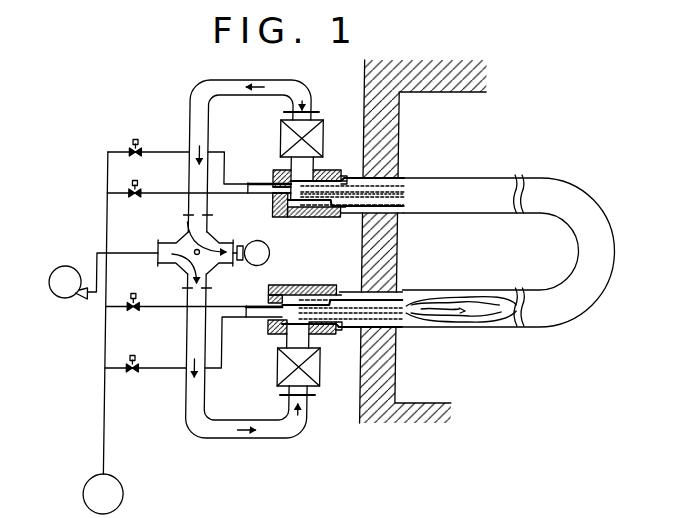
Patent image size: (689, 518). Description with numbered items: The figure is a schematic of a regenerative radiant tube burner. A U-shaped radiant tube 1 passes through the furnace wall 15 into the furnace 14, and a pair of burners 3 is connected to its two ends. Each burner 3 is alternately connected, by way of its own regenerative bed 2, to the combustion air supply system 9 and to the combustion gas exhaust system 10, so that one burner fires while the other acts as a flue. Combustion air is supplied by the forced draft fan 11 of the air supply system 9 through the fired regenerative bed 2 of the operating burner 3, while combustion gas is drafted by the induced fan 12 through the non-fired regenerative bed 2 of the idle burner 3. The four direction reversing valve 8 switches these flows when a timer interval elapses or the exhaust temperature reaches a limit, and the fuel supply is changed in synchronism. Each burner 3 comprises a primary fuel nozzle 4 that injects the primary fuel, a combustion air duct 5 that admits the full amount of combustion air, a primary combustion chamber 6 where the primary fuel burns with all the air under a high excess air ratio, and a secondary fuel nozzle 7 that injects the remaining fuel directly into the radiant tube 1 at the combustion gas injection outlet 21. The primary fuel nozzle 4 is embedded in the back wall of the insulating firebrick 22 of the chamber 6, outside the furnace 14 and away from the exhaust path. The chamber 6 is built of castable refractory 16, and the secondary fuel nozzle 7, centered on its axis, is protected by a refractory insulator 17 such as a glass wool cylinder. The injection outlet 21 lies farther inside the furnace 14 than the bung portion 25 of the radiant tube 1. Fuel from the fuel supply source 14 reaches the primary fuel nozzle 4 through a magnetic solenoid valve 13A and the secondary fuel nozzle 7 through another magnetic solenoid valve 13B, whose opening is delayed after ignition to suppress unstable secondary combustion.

The radiant tube 1 is at (567, 188).
The regenerative bed 2 is at (279, 142).
The burner 3 is at (322, 231).
The primary fuel nozzle 4 is at (260, 183).
The combustion air duct 5 is at (313, 168).
The primary combustion chamber 6 is at (308, 218).
The secondary fuel nozzle 7 is at (258, 193).
The four direction reversing valve 8 is at (178, 241).
The combustion air supply system 9 is at (130, 252).
The combustion gas exhaust system 10 is at (239, 246).
The forced draft fan 11 is at (65, 266).
The induced fan 12 is at (257, 266).
The magnetic solenoid valve 13A is at (134, 139).
The magnetic solenoid valve 13B is at (137, 182).
The fuel supply source / furnace 14 is at (483, 263).
The furnace wall 15 is at (423, 241).
The castable refractory 16 is at (298, 219).
The refractory insulator 17 is at (342, 218).
The combustion gas injection outlet 21 is at (406, 203).
The insulating firebrick 22 is at (287, 219).
The bung portion 25 is at (390, 178).